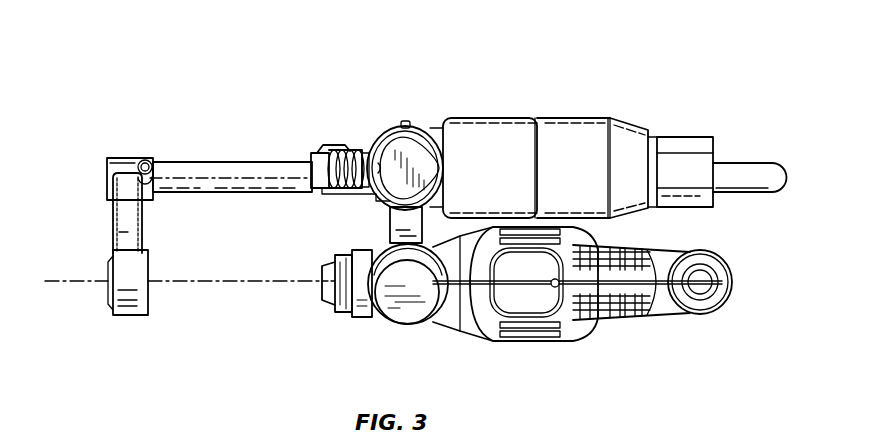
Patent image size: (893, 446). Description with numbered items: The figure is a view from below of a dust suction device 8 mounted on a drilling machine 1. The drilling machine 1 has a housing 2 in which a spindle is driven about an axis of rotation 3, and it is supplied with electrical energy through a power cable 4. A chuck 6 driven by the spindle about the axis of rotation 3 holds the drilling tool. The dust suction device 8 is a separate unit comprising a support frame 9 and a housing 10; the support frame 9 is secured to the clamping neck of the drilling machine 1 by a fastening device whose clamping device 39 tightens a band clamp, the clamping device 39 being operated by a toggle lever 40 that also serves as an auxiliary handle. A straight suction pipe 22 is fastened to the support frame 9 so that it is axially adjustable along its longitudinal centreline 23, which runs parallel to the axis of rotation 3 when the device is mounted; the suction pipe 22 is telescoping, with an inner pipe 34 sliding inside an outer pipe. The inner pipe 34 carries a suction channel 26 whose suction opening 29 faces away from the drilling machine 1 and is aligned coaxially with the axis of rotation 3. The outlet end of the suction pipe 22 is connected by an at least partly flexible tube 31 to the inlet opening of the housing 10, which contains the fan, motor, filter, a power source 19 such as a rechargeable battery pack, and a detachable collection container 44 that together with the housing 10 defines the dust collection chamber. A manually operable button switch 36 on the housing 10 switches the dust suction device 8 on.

The drilling machine 1 is at (736, 277).
The housing 2 is at (647, 287).
The axis of rotation 3 is at (226, 280).
The power cable 4 is at (694, 284).
The chuck 6 is at (362, 307).
The dust suction device 8 is at (688, 134).
The support frame 9 is at (387, 232).
The housing 10 is at (632, 119).
The power source 19 is at (391, 147).
The suction pipe 22 is at (278, 161).
The longitudinal centreline 23 is at (232, 172).
The suction channel 26 is at (114, 228).
The suction opening 29 is at (112, 297).
The tube 31 is at (752, 172).
The inner pipe 34 is at (176, 165).
The button switch 36 is at (352, 148).
The clamping device 39 is at (418, 331).
The toggle lever 40 is at (402, 327).
The collection container 44 is at (558, 145).